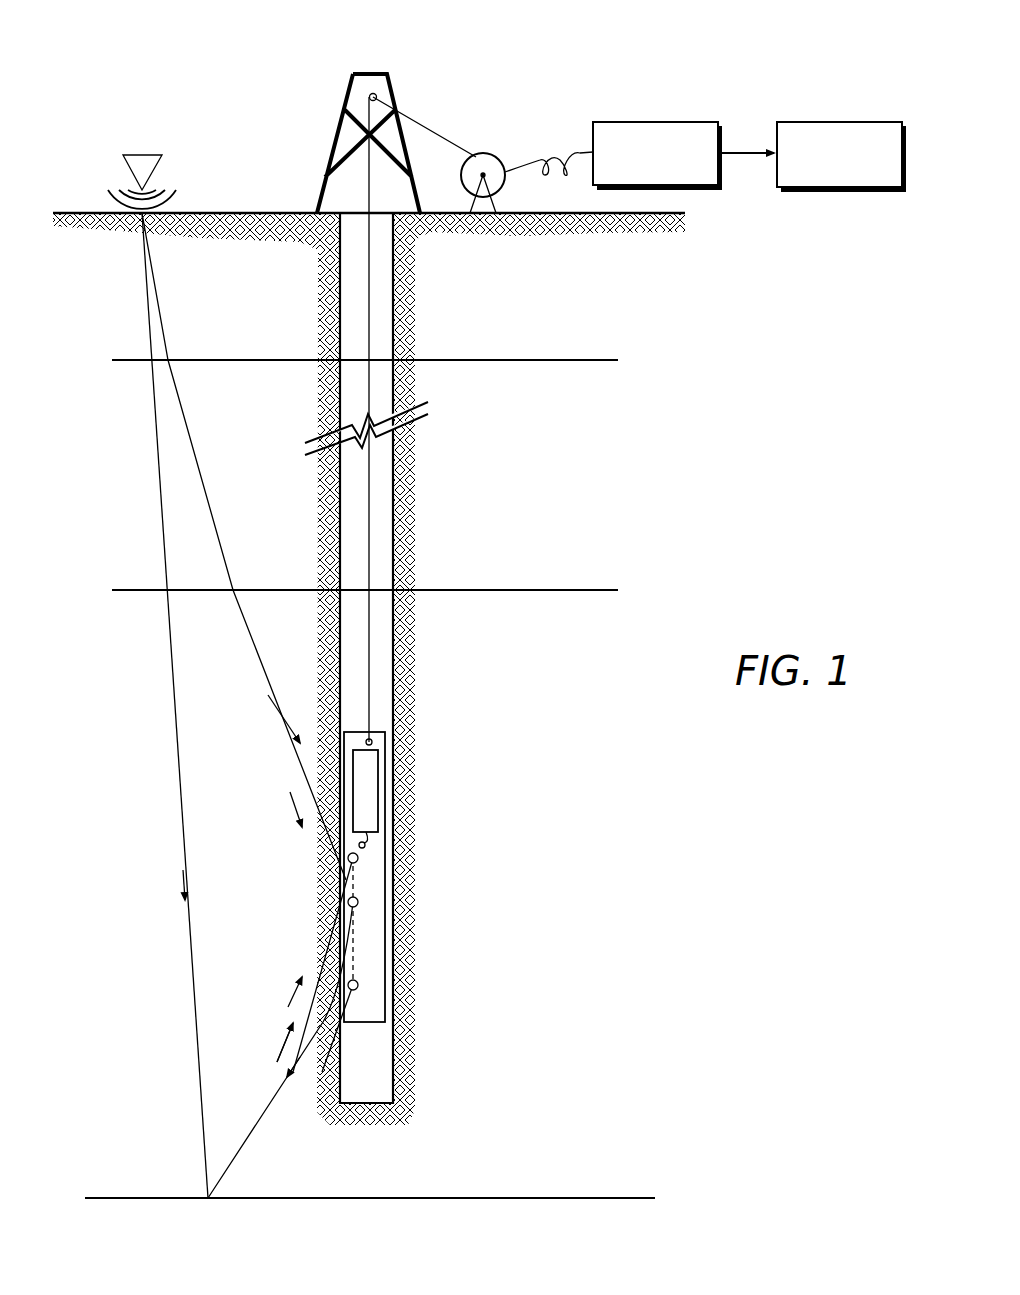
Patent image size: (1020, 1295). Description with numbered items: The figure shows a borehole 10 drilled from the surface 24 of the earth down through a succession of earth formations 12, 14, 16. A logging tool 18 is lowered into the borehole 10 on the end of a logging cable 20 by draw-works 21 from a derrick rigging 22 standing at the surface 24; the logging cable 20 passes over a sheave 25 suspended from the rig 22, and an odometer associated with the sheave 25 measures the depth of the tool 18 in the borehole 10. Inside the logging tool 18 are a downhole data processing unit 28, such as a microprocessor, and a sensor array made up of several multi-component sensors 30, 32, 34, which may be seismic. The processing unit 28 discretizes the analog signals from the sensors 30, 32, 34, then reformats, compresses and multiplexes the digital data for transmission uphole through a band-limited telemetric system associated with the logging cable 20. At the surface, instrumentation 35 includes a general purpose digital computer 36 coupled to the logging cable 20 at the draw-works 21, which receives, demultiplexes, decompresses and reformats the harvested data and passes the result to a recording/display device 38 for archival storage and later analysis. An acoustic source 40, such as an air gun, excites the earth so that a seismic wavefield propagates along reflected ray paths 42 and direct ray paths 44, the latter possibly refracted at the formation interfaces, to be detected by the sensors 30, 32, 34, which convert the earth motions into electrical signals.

The borehole 10 is at (350, 226).
The earth formation 12 is at (602, 298).
The earth formation 14 is at (602, 484).
The earth formation 16 is at (597, 898).
The logging tool 18 is at (385, 732).
The logging cable 20 is at (427, 118).
The draw-works 21 is at (490, 153).
The derrick rigging 22 is at (372, 74).
The surface of the earth 24 is at (242, 212).
The sheave 25 is at (363, 95).
The downhole data processing unit 28 is at (366, 788).
The multi-component sensor 30 is at (358, 860).
The multi-component sensor 32 is at (358, 902).
The multi-component sensor 34 is at (358, 985).
The surface instrumentation 35 is at (798, 68).
The general purpose digital computer 36 is at (655, 122).
The recording/display device 38 is at (851, 122).
The acoustic source 40 is at (142, 155).
The reflected ray paths 42 is at (253, 1130).
The direct ray paths 44 is at (270, 670).